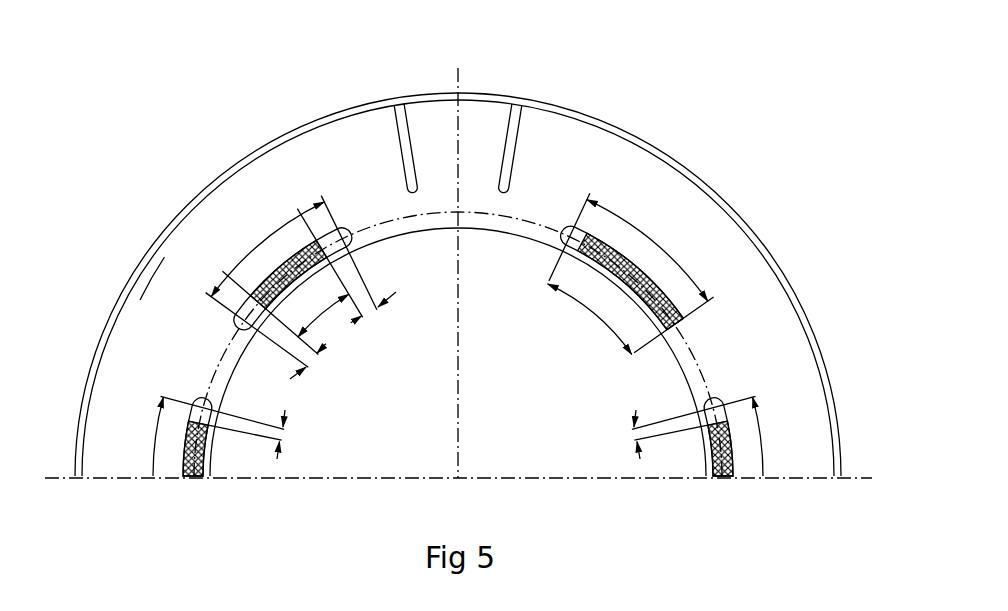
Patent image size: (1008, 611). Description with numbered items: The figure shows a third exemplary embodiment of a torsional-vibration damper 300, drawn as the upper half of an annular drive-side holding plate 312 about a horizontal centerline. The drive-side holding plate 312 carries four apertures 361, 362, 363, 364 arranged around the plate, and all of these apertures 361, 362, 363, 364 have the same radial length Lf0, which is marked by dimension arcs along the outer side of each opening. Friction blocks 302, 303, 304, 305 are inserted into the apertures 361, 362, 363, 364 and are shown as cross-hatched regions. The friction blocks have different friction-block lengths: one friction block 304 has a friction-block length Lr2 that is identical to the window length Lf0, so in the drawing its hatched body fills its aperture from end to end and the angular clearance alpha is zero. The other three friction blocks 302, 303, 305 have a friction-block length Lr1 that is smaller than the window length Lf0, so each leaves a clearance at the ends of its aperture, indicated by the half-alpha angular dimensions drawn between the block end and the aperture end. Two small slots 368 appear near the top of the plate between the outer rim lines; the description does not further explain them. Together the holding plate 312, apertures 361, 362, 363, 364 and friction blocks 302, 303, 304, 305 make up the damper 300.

The torsional-vibration damper 300 is at (573, 84).
The drive-side holding plate 312 is at (583, 168).
The fixing slots 368 is at (477, 157).
The aperture 362 is at (153, 257).
The friction block 302 is at (186, 428).
The aperture 361 is at (195, 416).
The friction block 303 is at (313, 247).
The friction block 304 is at (590, 232).
The aperture 363 is at (653, 280).
The friction block 305 is at (733, 447).
The aperture 364 is at (722, 408).